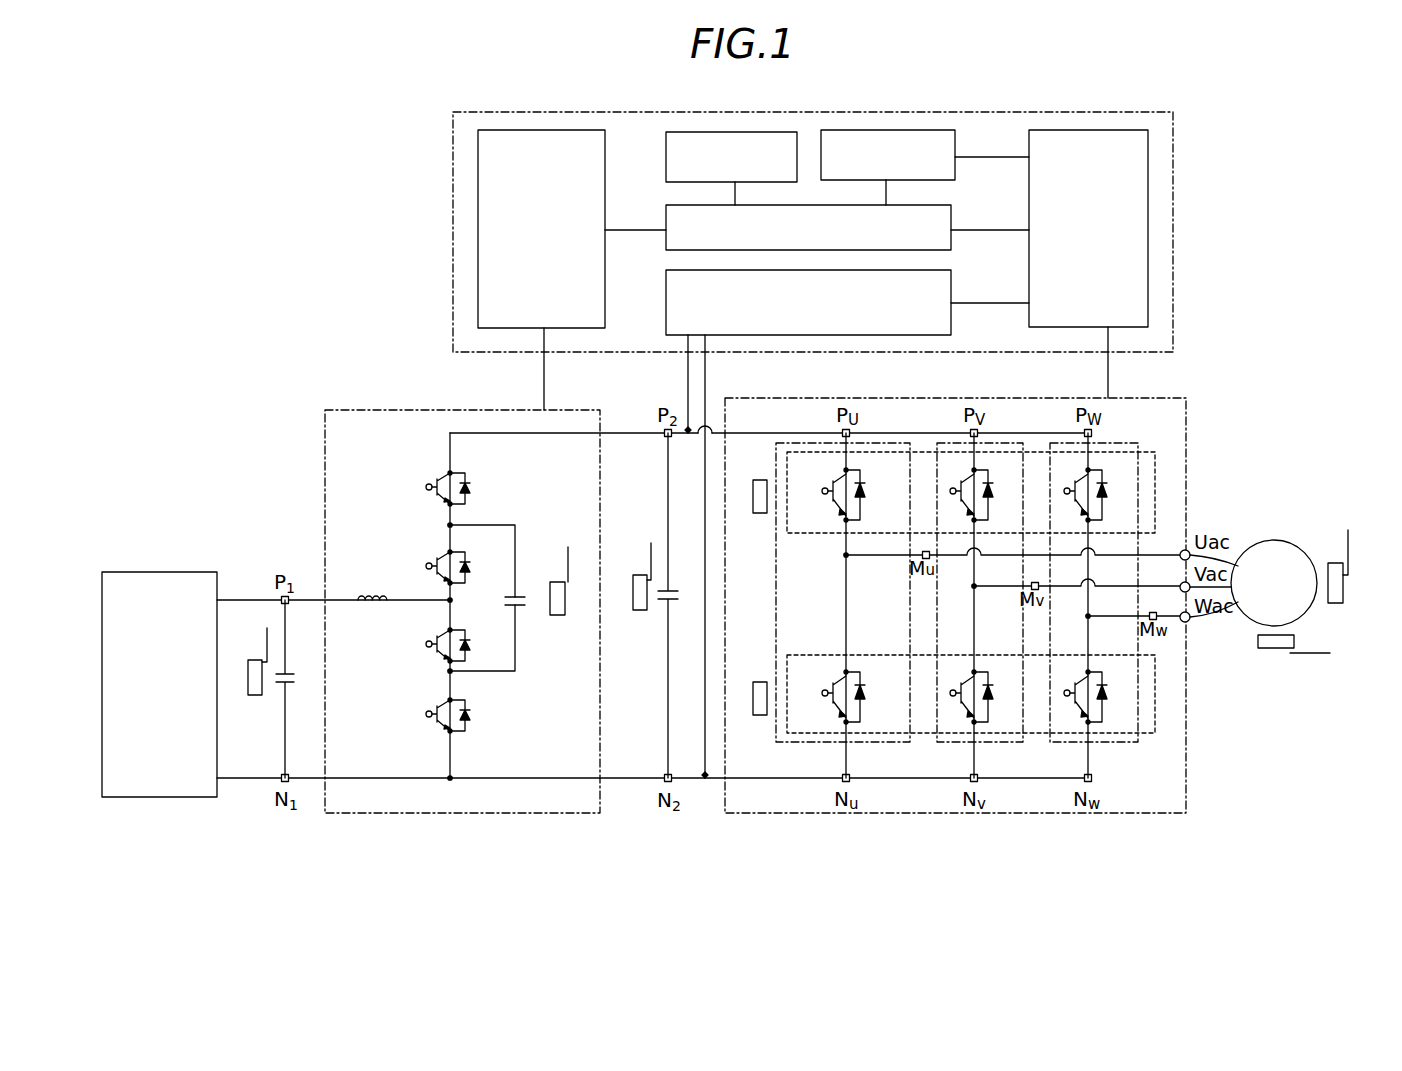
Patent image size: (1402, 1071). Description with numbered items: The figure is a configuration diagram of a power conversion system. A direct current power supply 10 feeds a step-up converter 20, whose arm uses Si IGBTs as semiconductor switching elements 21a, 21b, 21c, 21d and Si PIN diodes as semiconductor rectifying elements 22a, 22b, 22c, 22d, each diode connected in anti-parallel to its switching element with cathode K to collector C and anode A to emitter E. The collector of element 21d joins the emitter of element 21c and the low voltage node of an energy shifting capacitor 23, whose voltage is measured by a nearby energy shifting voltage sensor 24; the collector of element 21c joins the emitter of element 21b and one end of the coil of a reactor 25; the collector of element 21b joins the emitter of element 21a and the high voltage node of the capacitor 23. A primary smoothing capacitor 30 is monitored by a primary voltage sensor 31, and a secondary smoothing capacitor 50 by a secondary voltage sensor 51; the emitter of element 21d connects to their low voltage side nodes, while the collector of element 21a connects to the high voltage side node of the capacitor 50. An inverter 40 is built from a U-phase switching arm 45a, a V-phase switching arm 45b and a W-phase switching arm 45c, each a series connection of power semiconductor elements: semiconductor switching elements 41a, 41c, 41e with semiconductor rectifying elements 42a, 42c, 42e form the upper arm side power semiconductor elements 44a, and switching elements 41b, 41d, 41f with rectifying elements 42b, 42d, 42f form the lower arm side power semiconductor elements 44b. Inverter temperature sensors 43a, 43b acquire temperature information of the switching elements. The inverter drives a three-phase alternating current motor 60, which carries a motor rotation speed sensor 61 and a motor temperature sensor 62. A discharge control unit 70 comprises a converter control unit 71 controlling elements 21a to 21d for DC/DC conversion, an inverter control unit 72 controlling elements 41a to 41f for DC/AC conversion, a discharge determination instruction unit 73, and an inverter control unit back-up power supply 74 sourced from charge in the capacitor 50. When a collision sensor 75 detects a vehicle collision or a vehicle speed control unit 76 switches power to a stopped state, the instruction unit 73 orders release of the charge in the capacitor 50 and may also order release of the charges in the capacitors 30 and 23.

The direct current power supply 10 is at (188, 572).
The step-up converter 20 is at (345, 406).
The semiconductor switching element 21a is at (437, 481).
The semiconductor switching element 21b is at (437, 560).
The semiconductor switching element 21c is at (437, 638).
The semiconductor switching element 21d is at (437, 708).
The semiconductor rectifying element 22a is at (470, 481).
The semiconductor rectifying element 22b is at (470, 560).
The semiconductor rectifying element 22c is at (470, 638).
The semiconductor rectifying element 22d is at (470, 708).
The energy shifting capacitor 23 is at (520, 596).
The energy shifting voltage sensor 24 is at (566, 598).
The reactor 25 is at (372, 595).
The primary smoothing capacitor 30 is at (291, 672).
The primary voltage sensor 31 is at (248, 686).
The inverter 40 is at (792, 398).
The semiconductor switching element 41a is at (833, 483).
The semiconductor switching element 41b is at (833, 685).
The semiconductor switching element 41c is at (962, 490).
The semiconductor switching element 41d is at (962, 692).
The semiconductor switching element 41e is at (1076, 490).
The semiconductor switching element 41f is at (1076, 692).
The semiconductor rectifying element 42a is at (866, 484).
The semiconductor rectifying element 42b is at (866, 686).
The semiconductor rectifying element 42c is at (990, 486).
The semiconductor rectifying element 42d is at (990, 688).
The semiconductor rectifying element 42e is at (1104, 486).
The semiconductor rectifying element 42f is at (1104, 688).
The inverter temperature sensor 43a is at (755, 480).
The inverter temperature sensor 43b is at (755, 682).
The upper arm side power semiconductor elements 44a is at (1152, 452).
The lower arm side power semiconductor elements 44b is at (1152, 735).
The U-phase switching arm 45a is at (822, 743).
The V-phase switching arm 45b is at (960, 743).
The W-phase switching arm 45c is at (1068, 743).
The secondary smoothing capacitor 50 is at (672, 590).
The secondary voltage sensor 51 is at (633, 600).
The 3-phase alternating current motor 60 is at (1272, 540).
The motor rotation speed sensor 61 is at (1346, 578).
The motor temperature sensor 62 is at (1275, 650).
The discharge control unit 70 is at (452, 162).
The converter control unit 71 is at (605, 272).
The inverter control unit 72 is at (1029, 172).
The discharge determination instruction unit 73 is at (951, 211).
The inverter control unit back-up power supply 74 is at (951, 290).
The collision sensor 75 is at (666, 172).
The vehicle speed control unit 76 is at (955, 140).